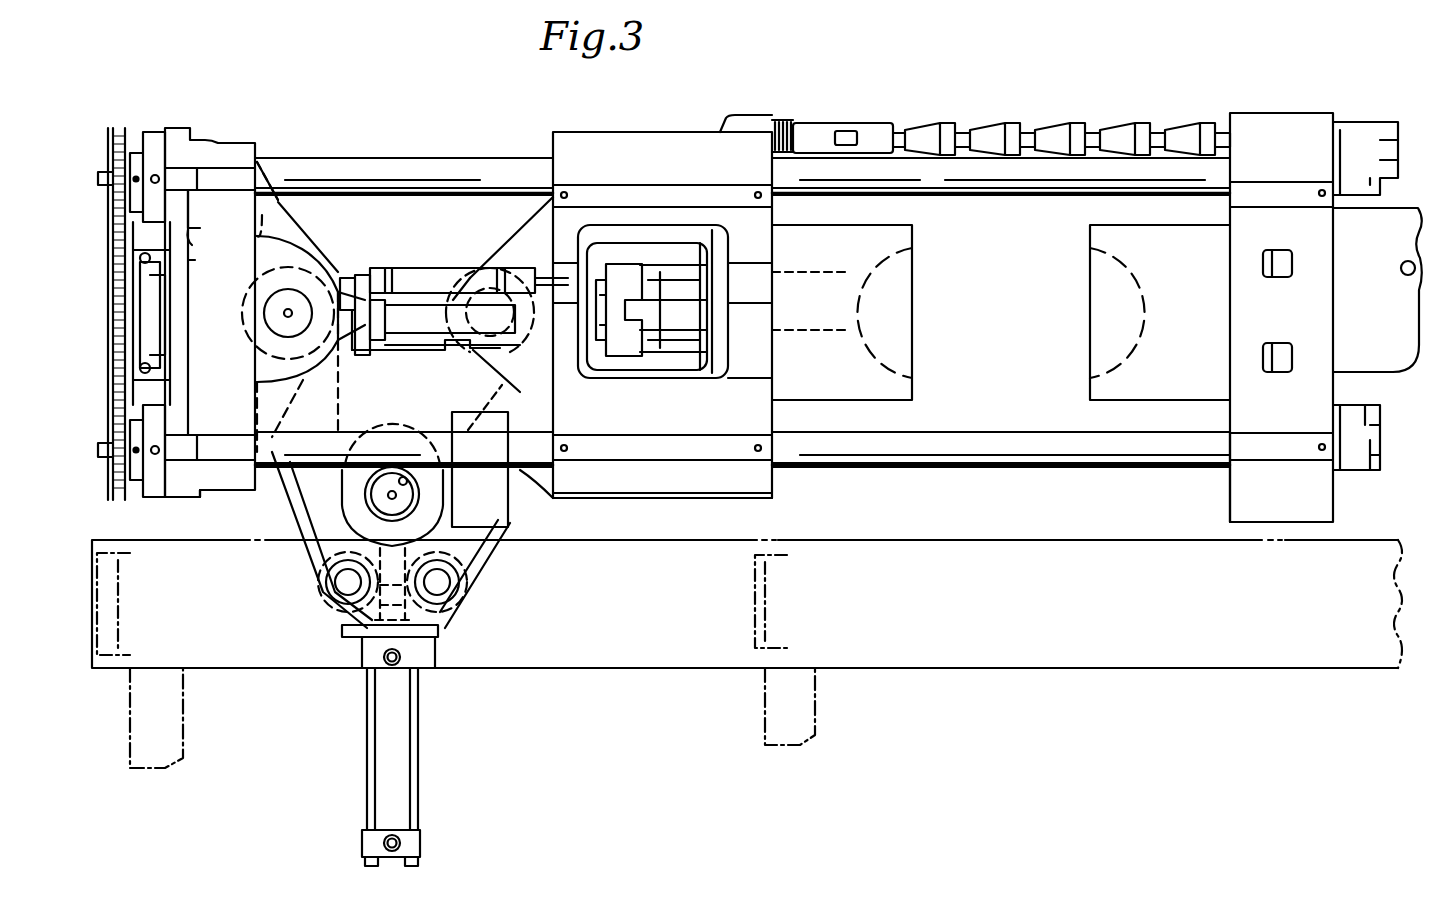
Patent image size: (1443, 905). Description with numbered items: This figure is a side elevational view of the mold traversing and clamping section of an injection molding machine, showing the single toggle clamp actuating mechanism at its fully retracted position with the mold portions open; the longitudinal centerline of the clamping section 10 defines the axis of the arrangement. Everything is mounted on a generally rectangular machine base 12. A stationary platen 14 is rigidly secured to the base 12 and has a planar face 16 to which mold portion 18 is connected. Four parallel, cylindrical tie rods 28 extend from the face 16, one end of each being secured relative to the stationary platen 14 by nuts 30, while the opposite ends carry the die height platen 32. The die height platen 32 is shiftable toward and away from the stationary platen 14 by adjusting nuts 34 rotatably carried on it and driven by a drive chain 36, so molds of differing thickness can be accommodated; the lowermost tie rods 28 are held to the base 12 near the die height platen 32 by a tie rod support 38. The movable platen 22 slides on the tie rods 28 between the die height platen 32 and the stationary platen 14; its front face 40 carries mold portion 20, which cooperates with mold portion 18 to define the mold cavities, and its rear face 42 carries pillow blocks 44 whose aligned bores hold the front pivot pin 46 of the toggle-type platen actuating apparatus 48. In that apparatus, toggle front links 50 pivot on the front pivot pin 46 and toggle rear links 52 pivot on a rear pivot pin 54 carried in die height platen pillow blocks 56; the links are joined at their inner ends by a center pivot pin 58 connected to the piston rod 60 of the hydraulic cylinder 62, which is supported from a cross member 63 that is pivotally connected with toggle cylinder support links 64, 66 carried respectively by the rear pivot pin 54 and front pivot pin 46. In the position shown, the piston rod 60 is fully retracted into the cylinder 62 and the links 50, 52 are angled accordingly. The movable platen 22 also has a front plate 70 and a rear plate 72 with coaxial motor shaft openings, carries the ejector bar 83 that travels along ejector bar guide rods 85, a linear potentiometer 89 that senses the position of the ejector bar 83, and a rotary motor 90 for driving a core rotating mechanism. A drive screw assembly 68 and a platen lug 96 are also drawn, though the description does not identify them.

The clamping section 10 is at (940, 53).
The machine base 12 is at (1062, 670).
The stationary platen 14 is at (1262, 118).
The planar face 16 is at (1228, 493).
The mold portion 18 is at (1150, 232).
The mold portion 20 is at (828, 226).
The movable platen 22 is at (625, 136).
The tie rods 28 is at (497, 160).
The nuts 30 is at (1347, 150).
The die height platen 32 is at (218, 146).
The adjusting nuts 34 is at (135, 152).
The drive chain 36 is at (176, 233).
The tie rod supports 38 is at (490, 510).
The front face 40 is at (776, 483).
The rear face 42 is at (548, 478).
The pillow blocks 44 is at (530, 228).
The front pivot pin 46 is at (478, 274).
The toggle-type platen actuating apparatus 48 is at (422, 92).
The toggle front links 50 is at (435, 352).
The toggle rear links 52 is at (352, 378).
The rear pivot pin 54 is at (296, 300).
The die height platen pillow blocks 56 is at (262, 266).
The center pivot pin 58 is at (404, 478).
The piston rod 60 is at (350, 532).
The hydraulic cylinder 62 is at (383, 783).
The cross member 63 is at (362, 615).
The toggle cylinder support link 64 is at (282, 522).
The toggle cylinder support link 66 is at (472, 556).
The drive screw 68 is at (1060, 130).
The front plate 70 is at (760, 404).
The rear plate 72 is at (567, 232).
The ejector bar 83 is at (622, 312).
The ejector bar guide rods 85 is at (705, 345).
The linear potentiometer 89 is at (388, 268).
The rotary motor 90 is at (364, 275).
The platen lug 96 is at (737, 116).